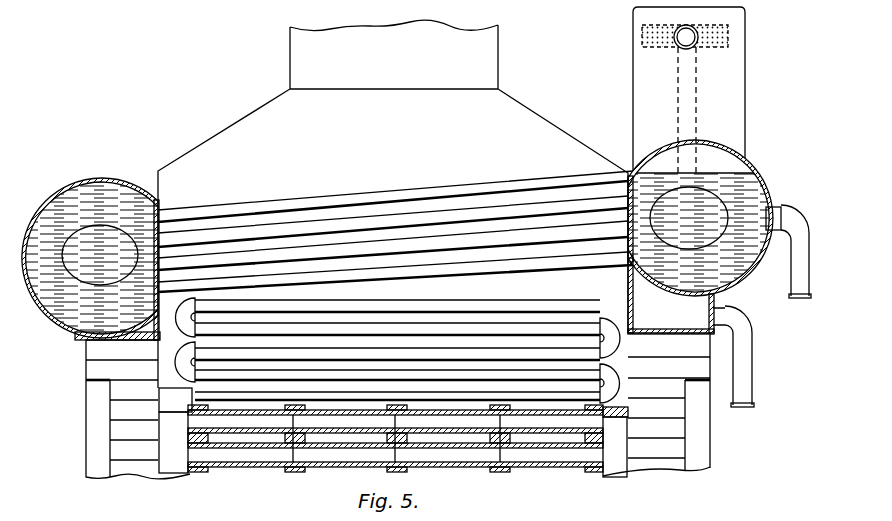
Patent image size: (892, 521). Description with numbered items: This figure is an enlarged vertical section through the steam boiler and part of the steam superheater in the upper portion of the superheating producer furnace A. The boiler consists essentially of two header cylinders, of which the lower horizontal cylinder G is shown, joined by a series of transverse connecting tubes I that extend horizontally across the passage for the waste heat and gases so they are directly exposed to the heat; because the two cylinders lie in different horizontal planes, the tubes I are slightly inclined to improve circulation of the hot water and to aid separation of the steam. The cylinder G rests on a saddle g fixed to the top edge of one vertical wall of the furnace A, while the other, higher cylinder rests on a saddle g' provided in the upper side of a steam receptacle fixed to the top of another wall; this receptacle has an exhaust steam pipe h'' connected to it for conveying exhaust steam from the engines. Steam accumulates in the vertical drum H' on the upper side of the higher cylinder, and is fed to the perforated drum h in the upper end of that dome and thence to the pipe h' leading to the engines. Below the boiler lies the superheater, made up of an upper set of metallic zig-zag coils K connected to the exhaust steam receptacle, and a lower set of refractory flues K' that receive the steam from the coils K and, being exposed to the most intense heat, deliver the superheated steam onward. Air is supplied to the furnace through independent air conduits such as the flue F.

The lower horizontal cylinder G is at (397, 240).
The transverse connecting tubes I is at (515, 265).
The zig-zag coils K is at (397, 344).
The refractory flues K' is at (395, 451).
The air conduit F is at (718, 453).
The superheating producer furnace A is at (712, 420).
The saddle g is at (94, 362).
The saddle g' is at (692, 296).
The exhaust steam pipe h'' is at (750, 356).
The pipe h' is at (729, 172).
The vertical drum H' is at (707, 89).
The perforated drum h is at (709, 37).